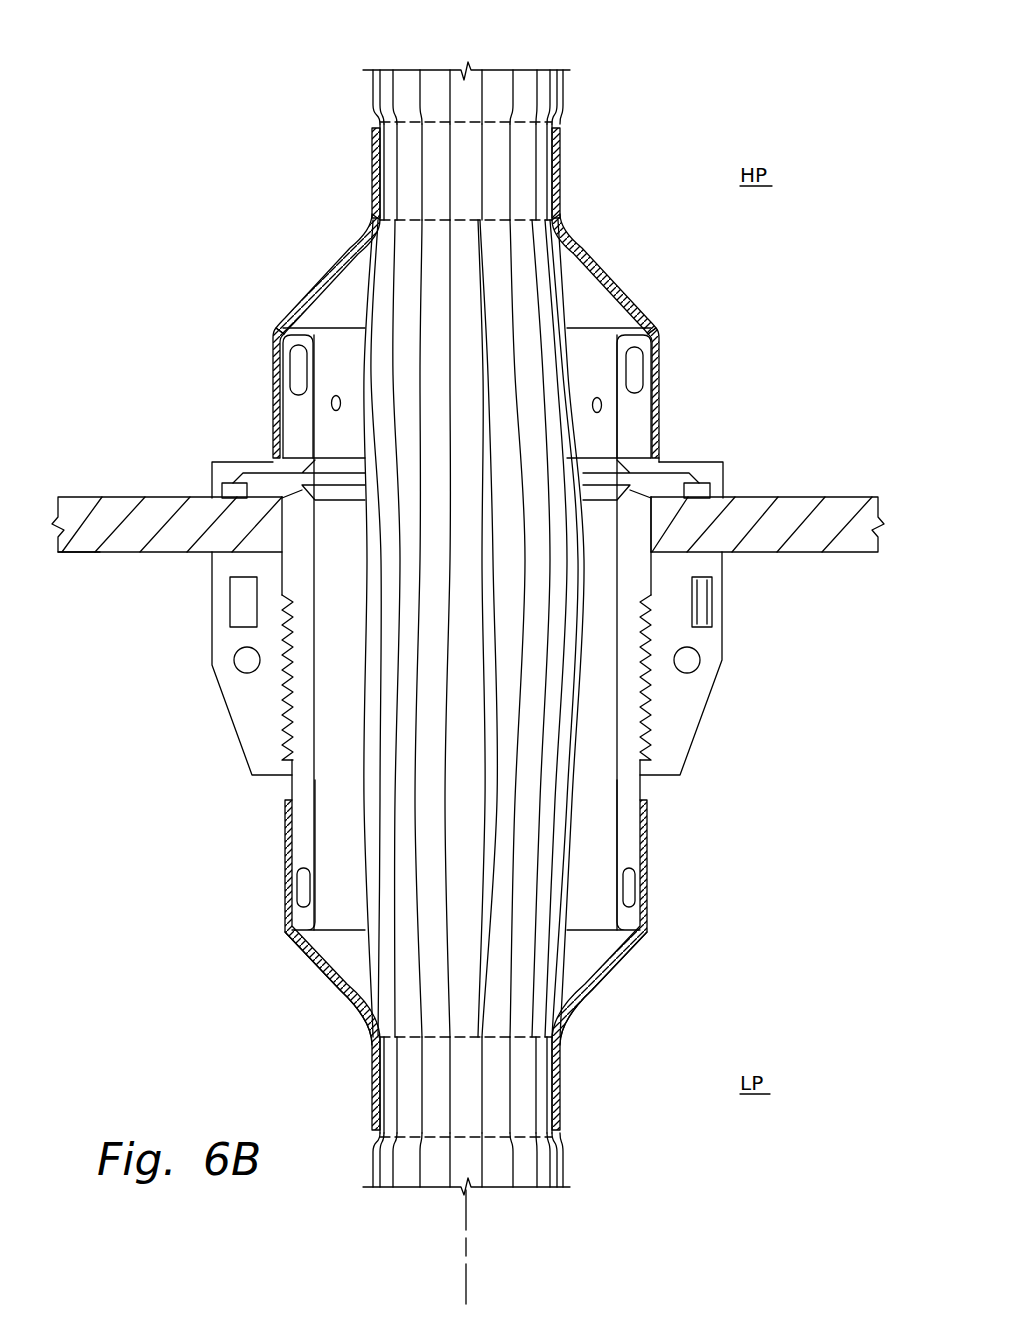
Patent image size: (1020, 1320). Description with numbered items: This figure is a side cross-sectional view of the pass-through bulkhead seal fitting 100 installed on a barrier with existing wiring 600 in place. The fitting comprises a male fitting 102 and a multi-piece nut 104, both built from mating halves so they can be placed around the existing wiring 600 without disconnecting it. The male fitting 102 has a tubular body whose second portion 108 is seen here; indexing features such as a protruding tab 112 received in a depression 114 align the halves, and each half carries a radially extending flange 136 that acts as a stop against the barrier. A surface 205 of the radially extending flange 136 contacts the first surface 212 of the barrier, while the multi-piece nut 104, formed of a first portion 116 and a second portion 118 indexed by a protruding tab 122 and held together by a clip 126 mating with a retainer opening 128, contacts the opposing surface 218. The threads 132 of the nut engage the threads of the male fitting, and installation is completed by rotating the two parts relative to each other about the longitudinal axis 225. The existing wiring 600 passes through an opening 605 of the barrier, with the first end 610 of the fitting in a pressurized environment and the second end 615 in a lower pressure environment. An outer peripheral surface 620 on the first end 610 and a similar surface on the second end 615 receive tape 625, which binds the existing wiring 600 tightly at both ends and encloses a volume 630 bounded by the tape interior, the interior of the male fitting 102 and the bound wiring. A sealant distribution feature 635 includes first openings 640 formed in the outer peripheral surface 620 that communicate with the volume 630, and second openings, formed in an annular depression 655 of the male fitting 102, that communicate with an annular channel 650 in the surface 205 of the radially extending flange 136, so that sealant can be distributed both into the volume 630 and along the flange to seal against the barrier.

The pass-through bulkhead seal fitting 100 is at (181, 123).
The male fitting 102 is at (259, 319).
The multi-piece nut 104 is at (213, 721).
The second portion 108 is at (712, 461).
The protruding tab 112 is at (635, 368).
The depression 114 is at (300, 372).
The first portion 116 is at (208, 642).
The second portion 118 is at (724, 642).
The protruding tab 122 is at (246, 660).
The clip 126 is at (700, 603).
The retainer opening 128 is at (242, 601).
The threads 132 is at (650, 698).
The radially extending flange 136 is at (722, 486).
The surface 205 is at (718, 498).
The first surface 212 is at (90, 497).
The opposing surface 218 is at (90, 553).
The longitudinal axis 225 is at (468, 1278).
The existing wiring 600 is at (577, 52).
The opening 605 is at (282, 540).
The first end 610 is at (648, 334).
The second end 615 is at (300, 950).
The outer peripheral surface 620 is at (654, 393).
The tape 625 is at (590, 259).
The volume 630 is at (598, 306).
The sealant distribution feature 635 is at (598, 513).
The first openings 640 is at (336, 396).
The annular channel 650 is at (226, 490).
The annular depression 655 is at (347, 490).